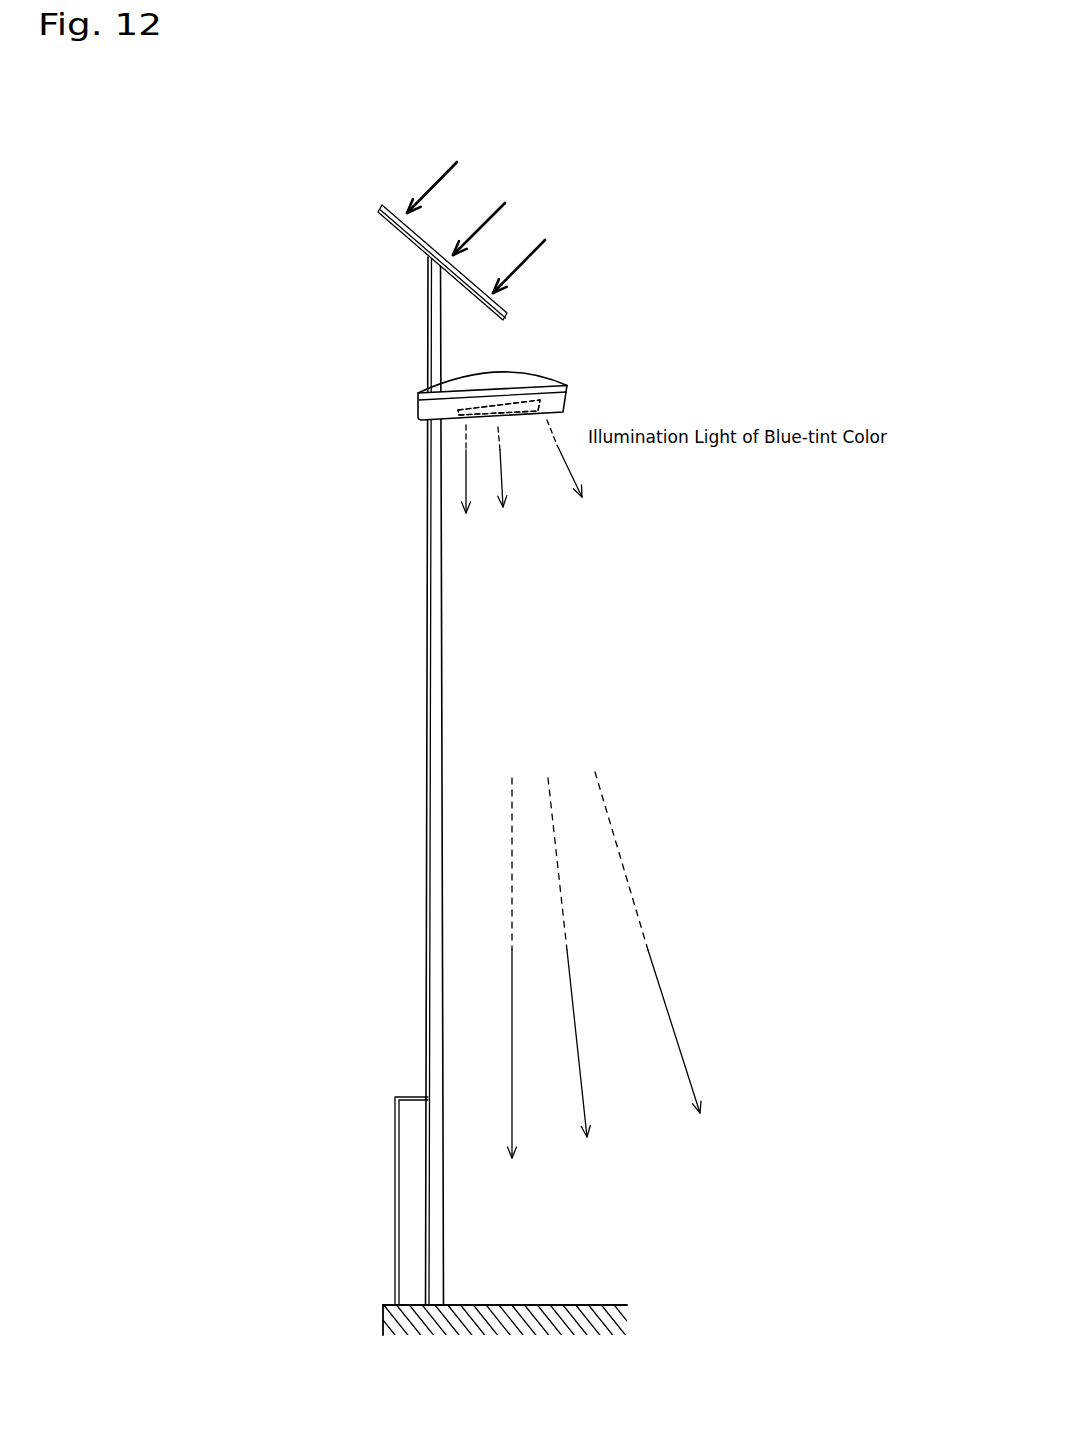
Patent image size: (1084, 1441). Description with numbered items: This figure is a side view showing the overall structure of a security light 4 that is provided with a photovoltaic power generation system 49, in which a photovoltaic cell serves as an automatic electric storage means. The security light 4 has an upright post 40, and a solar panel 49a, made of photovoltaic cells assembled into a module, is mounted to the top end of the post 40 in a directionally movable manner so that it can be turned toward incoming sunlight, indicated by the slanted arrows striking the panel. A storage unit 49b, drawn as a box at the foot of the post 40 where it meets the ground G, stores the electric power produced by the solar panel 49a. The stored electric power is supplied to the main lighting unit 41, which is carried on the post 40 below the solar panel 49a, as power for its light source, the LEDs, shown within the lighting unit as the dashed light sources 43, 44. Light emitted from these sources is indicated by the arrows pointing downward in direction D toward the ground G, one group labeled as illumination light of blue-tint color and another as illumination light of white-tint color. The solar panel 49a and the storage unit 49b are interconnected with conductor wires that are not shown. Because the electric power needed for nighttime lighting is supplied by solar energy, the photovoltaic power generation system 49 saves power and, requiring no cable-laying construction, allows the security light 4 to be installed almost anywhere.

The security light 4 is at (392, 732).
The post 40 is at (443, 738).
The main lighting unit 41 is at (509, 354).
The light source (blue-tint) 43 is at (506, 403).
The light source (white-tint) 44 is at (499, 407).
The photovoltaic power generation system 49 is at (392, 243).
The solar panel 49a is at (379, 209).
The storage unit 49b is at (395, 1120).
The illumination direction D is at (584, 958).
The ground G is at (605, 1305).